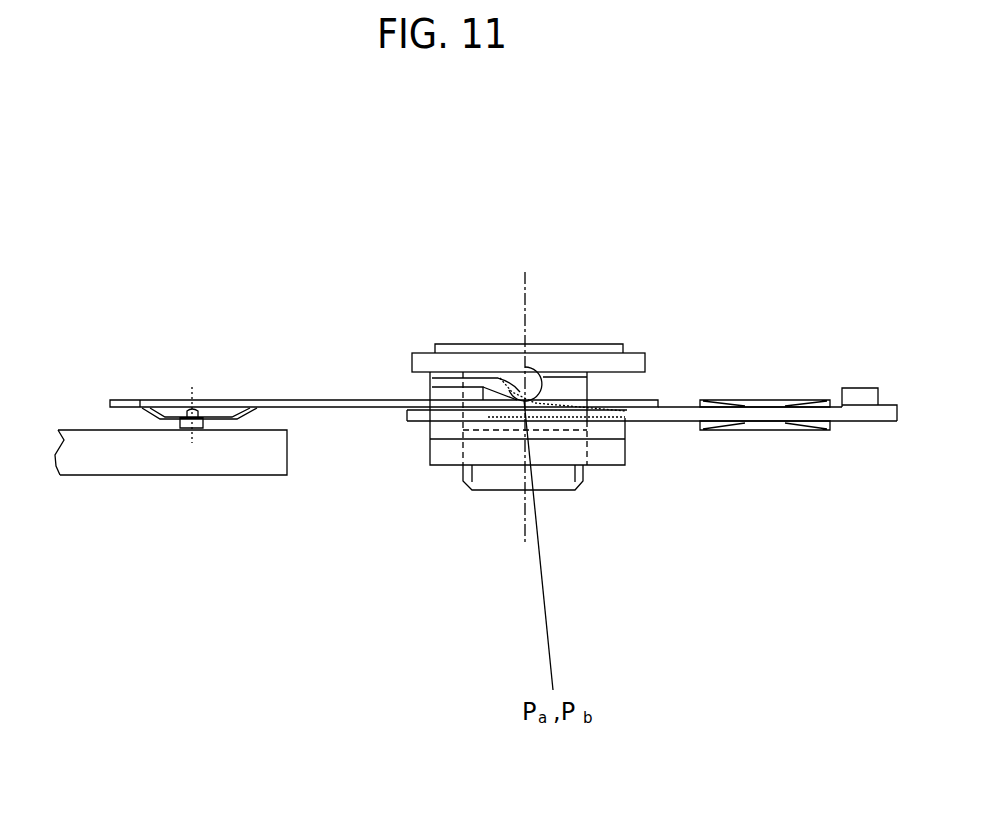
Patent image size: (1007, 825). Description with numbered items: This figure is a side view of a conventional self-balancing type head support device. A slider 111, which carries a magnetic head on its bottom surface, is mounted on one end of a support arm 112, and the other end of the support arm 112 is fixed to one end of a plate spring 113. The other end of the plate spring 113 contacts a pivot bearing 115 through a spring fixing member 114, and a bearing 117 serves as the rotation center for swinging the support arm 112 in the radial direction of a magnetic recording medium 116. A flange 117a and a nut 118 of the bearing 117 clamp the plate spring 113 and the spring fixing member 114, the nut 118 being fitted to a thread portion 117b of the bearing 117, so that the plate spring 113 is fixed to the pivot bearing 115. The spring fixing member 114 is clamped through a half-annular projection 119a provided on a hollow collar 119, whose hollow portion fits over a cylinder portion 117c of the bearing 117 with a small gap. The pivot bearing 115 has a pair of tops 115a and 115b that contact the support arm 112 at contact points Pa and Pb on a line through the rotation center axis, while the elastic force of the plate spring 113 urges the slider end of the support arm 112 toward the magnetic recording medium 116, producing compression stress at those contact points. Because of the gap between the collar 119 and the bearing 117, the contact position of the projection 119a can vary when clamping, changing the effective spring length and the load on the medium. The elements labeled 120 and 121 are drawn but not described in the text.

The slider 111 is at (197, 420).
The support arm 112 is at (302, 403).
The plate spring 113 is at (471, 456).
The spring fixing member 114 is at (447, 374).
The pivot bearing 115 is at (443, 362).
The top 115a is at (517, 383).
The top 115b is at (520, 385).
The magnetic recording medium 116 is at (163, 458).
The bearing 117 is at (530, 350).
The flange 117a is at (553, 352).
The thread portion 117b is at (564, 473).
The cylinder portion 117c is at (572, 387).
The nut 118 is at (498, 450).
The hollow collar 119 is at (453, 429).
The projection 119a is at (448, 390).
The clip 120 is at (808, 425).
The arm extension 121 is at (683, 413).